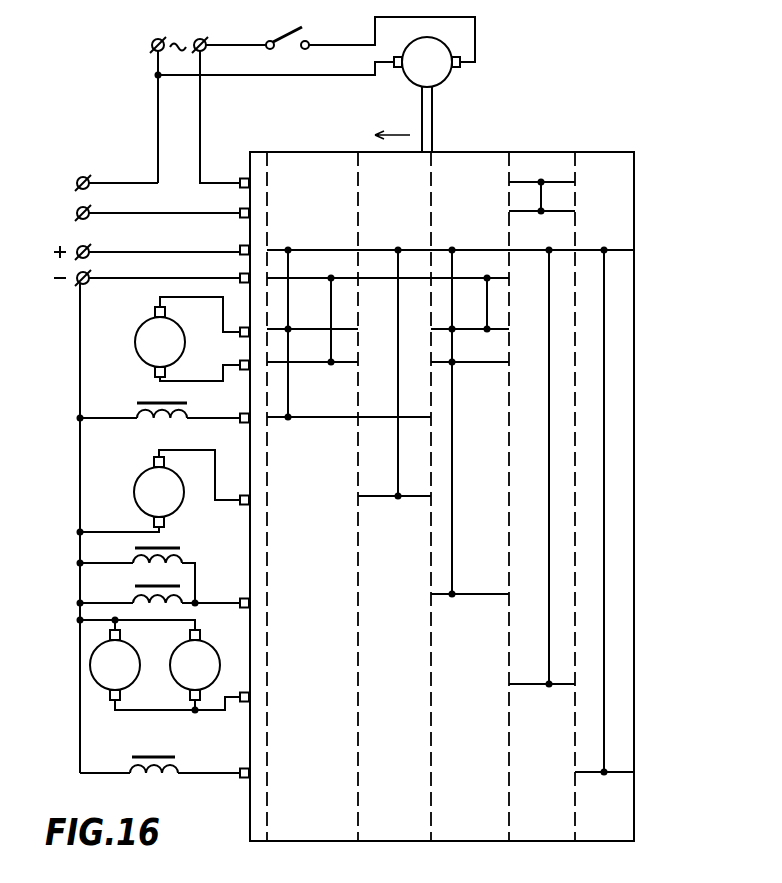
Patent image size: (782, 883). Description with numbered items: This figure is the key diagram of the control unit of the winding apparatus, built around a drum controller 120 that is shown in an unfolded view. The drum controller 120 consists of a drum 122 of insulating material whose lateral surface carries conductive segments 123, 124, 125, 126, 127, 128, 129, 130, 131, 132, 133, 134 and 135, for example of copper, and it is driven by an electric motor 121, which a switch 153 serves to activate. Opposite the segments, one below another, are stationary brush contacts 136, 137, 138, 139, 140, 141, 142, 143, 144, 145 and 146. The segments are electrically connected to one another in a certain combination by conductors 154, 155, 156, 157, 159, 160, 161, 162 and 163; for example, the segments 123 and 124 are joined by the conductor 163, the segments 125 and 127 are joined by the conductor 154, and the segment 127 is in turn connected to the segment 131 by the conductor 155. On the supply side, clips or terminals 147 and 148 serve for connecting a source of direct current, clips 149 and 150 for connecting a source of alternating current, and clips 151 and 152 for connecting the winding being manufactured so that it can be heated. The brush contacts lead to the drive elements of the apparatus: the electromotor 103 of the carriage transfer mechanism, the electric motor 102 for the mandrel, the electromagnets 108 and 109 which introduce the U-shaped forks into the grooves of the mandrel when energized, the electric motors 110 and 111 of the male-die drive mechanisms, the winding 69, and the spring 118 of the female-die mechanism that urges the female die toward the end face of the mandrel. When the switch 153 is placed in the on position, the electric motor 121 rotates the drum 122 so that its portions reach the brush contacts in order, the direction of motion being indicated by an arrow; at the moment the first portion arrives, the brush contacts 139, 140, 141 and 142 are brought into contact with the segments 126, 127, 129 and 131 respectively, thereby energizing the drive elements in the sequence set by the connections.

The inductor coil 69 is at (160, 421).
The electric motor 102 is at (134, 495).
The electromotor 103 is at (135, 347).
The electromagnet 108 is at (182, 560).
The electromagnet 109 is at (133, 600).
The electric motor 110 is at (130, 659).
The electric motor 111 is at (180, 672).
The spring 118 is at (178, 772).
The drum controller 120 is at (533, 116).
The electric motor 121 is at (413, 72).
The drum 122 is at (603, 158).
The segment 123 is at (522, 182).
The segment 124 is at (560, 214).
The segment 125 is at (386, 248).
The segment 126 is at (468, 276).
The segment 127 is at (345, 327).
The segment 128 is at (498, 328).
The segment 129 is at (345, 360).
The segment 130 is at (498, 361).
The segment 131 is at (327, 419).
The segment 132 is at (410, 499).
The segment 133 is at (480, 592).
The segment 134 is at (530, 682).
The segment 135 is at (600, 777).
The brush contact 136 is at (244, 178).
The brush contact 137 is at (238, 218).
The brush contact 138 is at (238, 253).
The brush contact 139 is at (244, 284).
The brush contact 140 is at (239, 338).
The brush contact 141 is at (243, 372).
The brush contact 142 is at (243, 425).
The brush contact 143 is at (243, 496).
The brush contact 144 is at (243, 600).
The brush contact 145 is at (243, 705).
The brush contact 146 is at (243, 780).
The terminal 147 is at (88, 246).
The terminal 148 is at (88, 284).
The clip 149 is at (159, 38).
The clip 150 is at (202, 38).
The clip 151 is at (77, 183).
The clip 152 is at (77, 213).
The switch 153 is at (306, 37).
The conductor 154 is at (290, 301).
The conductor 155 is at (290, 399).
The conductor 156 is at (332, 290).
The conductor 157 is at (395, 455).
The conductor 159 is at (452, 405).
The conductor 160 is at (490, 298).
The conductor 161 is at (548, 463).
The conductor 162 is at (604, 730).
The conductor 163 is at (544, 196).